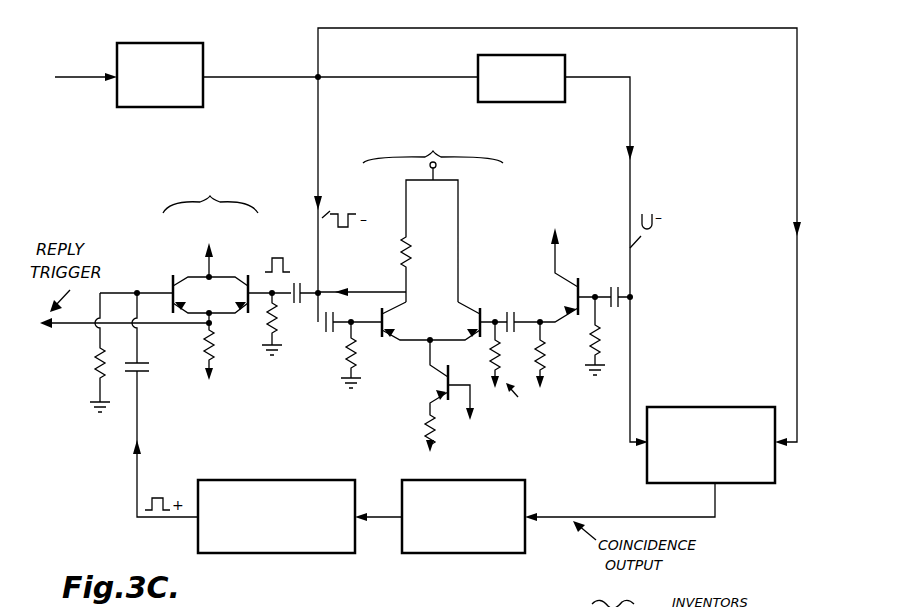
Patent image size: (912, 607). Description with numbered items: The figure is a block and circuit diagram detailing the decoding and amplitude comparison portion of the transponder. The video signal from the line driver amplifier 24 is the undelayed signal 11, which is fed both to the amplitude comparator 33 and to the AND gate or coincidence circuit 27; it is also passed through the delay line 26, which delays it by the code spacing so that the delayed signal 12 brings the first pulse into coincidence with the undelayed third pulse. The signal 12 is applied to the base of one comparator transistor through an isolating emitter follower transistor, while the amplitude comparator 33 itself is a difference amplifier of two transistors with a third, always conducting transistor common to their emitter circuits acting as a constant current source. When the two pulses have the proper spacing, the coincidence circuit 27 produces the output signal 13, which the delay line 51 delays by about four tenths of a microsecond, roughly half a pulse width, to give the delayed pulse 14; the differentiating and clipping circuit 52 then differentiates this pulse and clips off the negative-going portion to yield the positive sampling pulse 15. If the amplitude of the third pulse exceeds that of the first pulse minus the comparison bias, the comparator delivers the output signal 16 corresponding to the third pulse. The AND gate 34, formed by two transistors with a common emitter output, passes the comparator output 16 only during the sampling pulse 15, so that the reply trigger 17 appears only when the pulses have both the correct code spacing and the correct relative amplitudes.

The line driver amplifier 24 is at (146, 43).
The delay line 26 is at (478, 56).
The amplitude comparator 33 is at (479, 300).
The AND gate 34 is at (240, 276).
The AND gate or coincidence circuit 27 is at (724, 395).
The delay line 51 is at (485, 470).
The differentiating and clipping circuit 52 is at (280, 480).
The signal 11 is at (332, 199).
The signal 12 is at (615, 261).
The signal 13 is at (620, 502).
The delayed pulse 14 is at (378, 506).
The sampling pulse 15 is at (165, 469).
The comparator output signal 16 is at (362, 281).
The reply trigger 17 is at (136, 307).